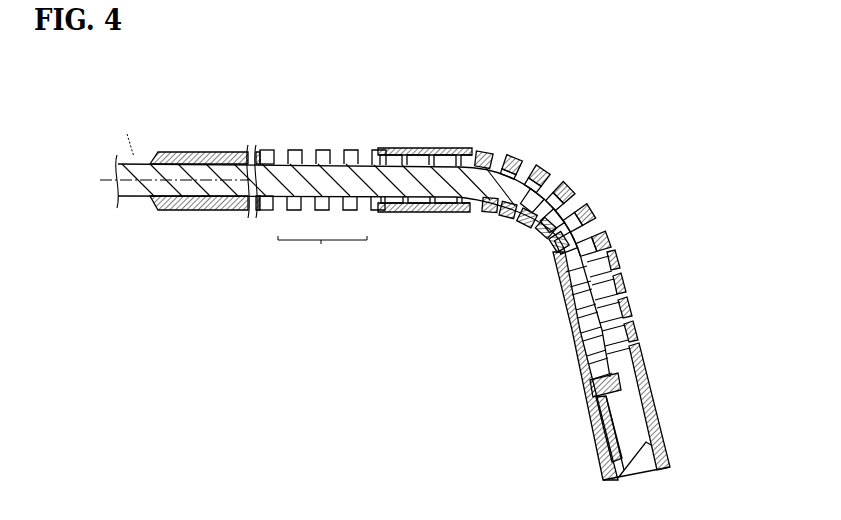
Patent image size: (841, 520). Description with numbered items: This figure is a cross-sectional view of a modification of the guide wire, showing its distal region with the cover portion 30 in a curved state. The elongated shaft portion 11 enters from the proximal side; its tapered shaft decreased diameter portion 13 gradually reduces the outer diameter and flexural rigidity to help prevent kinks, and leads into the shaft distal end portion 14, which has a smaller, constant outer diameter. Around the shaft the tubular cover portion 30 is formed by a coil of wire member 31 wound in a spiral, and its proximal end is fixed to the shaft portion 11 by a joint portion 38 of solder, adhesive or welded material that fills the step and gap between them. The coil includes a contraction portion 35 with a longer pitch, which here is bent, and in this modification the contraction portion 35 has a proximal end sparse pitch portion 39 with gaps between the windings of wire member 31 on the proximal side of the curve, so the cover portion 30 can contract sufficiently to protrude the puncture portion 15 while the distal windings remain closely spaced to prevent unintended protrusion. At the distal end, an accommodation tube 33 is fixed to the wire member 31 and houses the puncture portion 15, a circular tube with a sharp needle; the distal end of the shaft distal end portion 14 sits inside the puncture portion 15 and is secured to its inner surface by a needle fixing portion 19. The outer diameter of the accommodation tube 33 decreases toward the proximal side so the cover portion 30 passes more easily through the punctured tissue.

The shaft portion 11 is at (217, 150).
The joint portion 38 is at (147, 158).
The cover portion 30 is at (273, 151).
The shaft decreased diameter portion 13 is at (357, 151).
The proximal end sparse pitch portion 39 is at (322, 258).
The wire member 31 is at (397, 150).
The contraction portion 35 is at (527, 152).
The shaft distal end portion 14 is at (610, 336).
The needle fixing portion 19 is at (588, 380).
The puncture portion 15 is at (598, 428).
The accommodation tube 33 is at (667, 435).